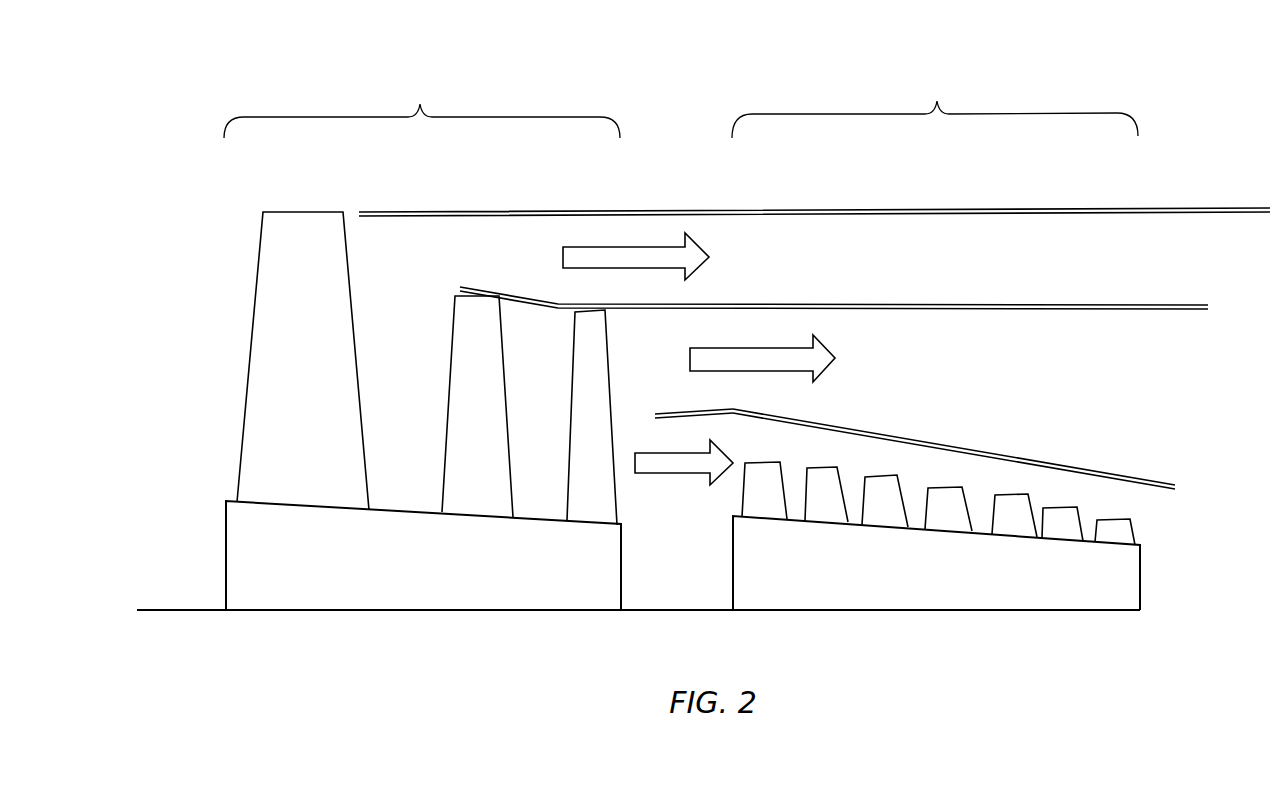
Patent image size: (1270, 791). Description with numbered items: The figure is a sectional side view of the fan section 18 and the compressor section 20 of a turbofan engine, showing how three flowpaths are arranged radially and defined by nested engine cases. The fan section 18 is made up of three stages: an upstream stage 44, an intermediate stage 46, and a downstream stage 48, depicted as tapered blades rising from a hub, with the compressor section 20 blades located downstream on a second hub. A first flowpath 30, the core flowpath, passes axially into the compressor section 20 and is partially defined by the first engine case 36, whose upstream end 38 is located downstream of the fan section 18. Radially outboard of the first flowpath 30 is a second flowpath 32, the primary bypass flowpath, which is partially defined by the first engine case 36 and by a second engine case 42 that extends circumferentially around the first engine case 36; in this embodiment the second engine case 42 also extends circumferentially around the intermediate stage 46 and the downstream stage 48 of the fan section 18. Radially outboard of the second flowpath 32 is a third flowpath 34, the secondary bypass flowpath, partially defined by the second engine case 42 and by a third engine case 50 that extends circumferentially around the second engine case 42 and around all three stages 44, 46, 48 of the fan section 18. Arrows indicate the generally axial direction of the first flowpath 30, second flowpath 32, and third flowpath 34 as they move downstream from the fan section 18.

The fan section 18 is at (422, 103).
The compressor section 20 is at (935, 102).
The first flowpath 30 is at (683, 470).
The second flowpath 32 is at (817, 352).
The third flowpath 34 is at (673, 258).
The first engine case 36 is at (950, 448).
The upstream end 38 is at (673, 408).
The second engine case 42 is at (897, 305).
The upstream stage 44 is at (247, 317).
The intermediate stage 46 is at (437, 372).
The downstream stage 48 is at (560, 392).
The third engine case 50 is at (1002, 208).